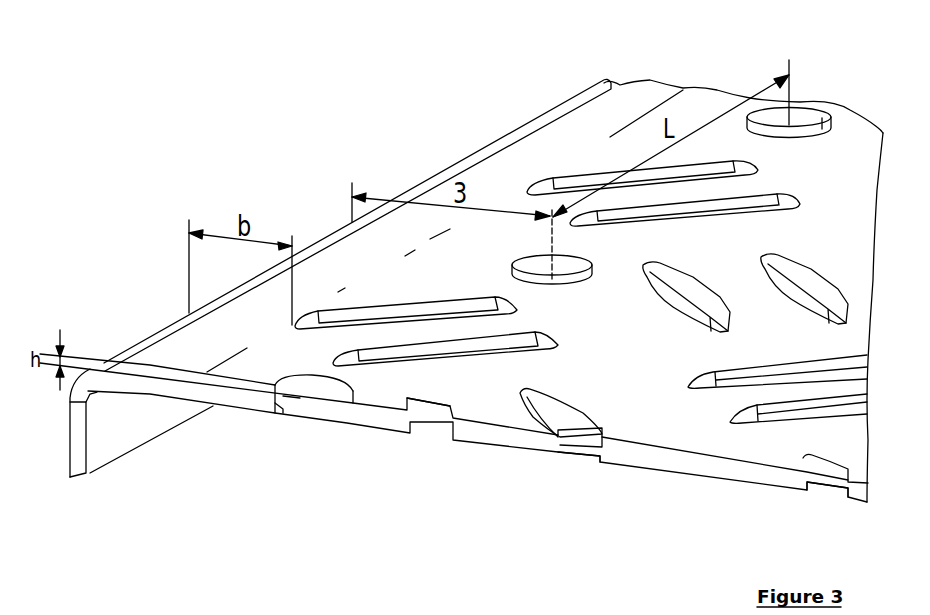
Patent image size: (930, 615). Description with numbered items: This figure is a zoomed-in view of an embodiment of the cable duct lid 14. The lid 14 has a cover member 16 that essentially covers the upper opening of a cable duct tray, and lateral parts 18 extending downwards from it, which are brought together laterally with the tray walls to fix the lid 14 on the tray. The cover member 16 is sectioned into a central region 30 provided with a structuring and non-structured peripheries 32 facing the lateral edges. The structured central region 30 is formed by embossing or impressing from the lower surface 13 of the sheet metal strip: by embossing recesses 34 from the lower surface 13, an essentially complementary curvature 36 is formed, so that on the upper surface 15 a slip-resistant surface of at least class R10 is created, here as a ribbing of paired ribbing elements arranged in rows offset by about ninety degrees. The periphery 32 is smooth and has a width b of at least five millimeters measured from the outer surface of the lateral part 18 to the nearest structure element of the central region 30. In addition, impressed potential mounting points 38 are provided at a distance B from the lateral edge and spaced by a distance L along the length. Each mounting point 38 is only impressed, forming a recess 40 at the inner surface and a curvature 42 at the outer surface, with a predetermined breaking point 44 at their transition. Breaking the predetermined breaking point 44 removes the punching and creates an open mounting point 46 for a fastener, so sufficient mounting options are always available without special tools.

The lower surface 13 is at (517, 450).
The cable duct lid 14 is at (305, 152).
The upper surface 15 is at (658, 430).
The cover member 16 is at (733, 95).
The lateral part 18 is at (115, 432).
The central region 30 is at (840, 167).
The periphery 32 is at (565, 143).
The recess 34 is at (577, 457).
The curvature 36 is at (600, 433).
The mounting point 38 is at (313, 403).
The recess 40 is at (294, 414).
The curvature 42 is at (348, 392).
The predetermined breaking point 44 is at (268, 402).
The open mounting point 46 is at (563, 273).